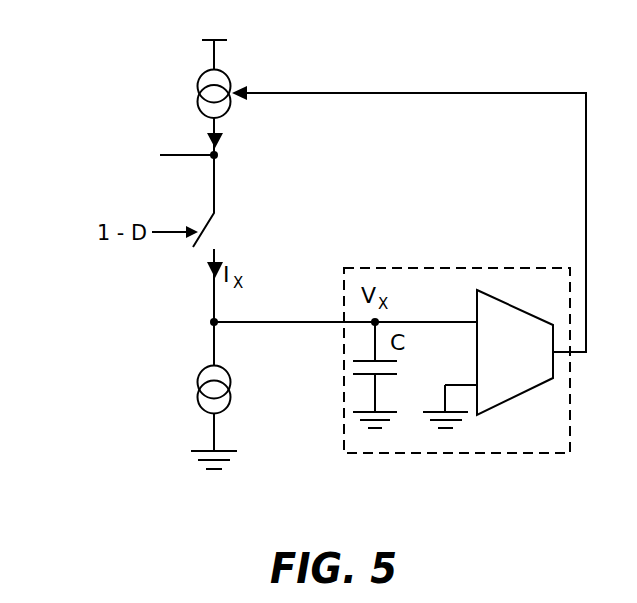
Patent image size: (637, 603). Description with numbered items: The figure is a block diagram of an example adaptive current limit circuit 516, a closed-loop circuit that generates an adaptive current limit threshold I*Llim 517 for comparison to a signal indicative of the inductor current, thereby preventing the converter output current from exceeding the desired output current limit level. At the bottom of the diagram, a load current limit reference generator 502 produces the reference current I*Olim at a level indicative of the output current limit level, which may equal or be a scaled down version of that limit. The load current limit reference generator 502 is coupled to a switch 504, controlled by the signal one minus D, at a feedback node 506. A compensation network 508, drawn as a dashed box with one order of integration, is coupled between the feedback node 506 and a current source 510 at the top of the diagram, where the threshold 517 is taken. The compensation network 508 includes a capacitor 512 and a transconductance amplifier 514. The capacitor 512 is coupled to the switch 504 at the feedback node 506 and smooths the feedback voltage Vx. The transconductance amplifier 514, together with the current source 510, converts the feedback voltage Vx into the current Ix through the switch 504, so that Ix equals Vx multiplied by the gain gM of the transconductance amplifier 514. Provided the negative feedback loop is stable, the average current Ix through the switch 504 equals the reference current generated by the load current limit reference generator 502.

The load current limit reference generator 502 is at (200, 408).
The switch 504 is at (214, 238).
The feedback node 506 is at (212, 322).
The compensation network 508 is at (463, 268).
The current source 510 is at (228, 72).
The capacitor 512 is at (353, 366).
The transconductance amplifier 514 is at (520, 400).
The adaptive current limit circuit 516 is at (128, 44).
The adaptive current limit threshold I*Llim 517 is at (105, 163).